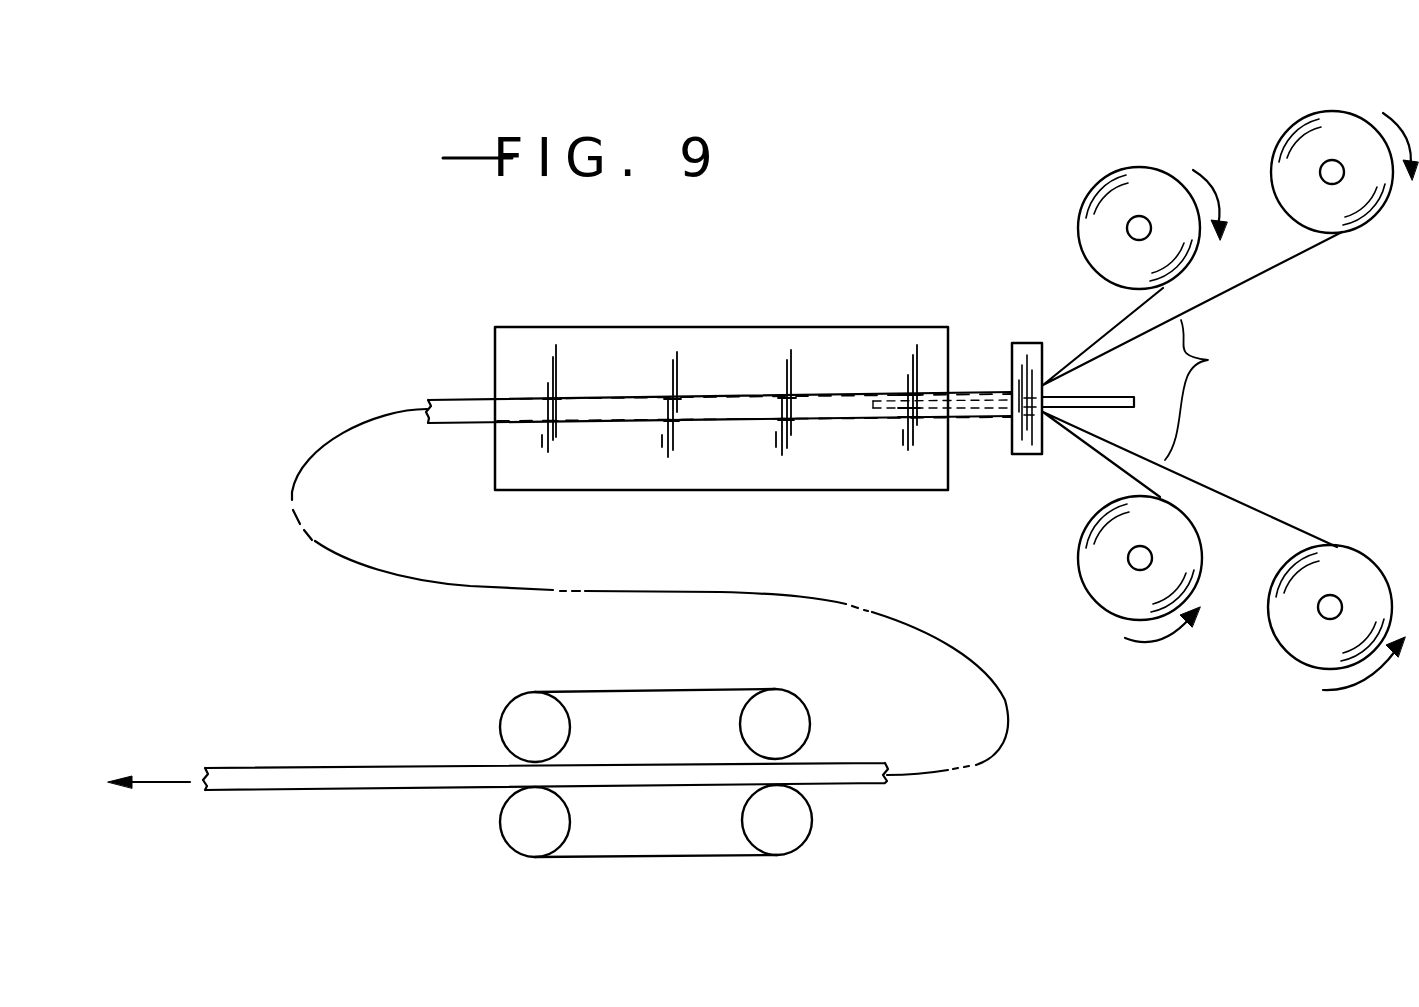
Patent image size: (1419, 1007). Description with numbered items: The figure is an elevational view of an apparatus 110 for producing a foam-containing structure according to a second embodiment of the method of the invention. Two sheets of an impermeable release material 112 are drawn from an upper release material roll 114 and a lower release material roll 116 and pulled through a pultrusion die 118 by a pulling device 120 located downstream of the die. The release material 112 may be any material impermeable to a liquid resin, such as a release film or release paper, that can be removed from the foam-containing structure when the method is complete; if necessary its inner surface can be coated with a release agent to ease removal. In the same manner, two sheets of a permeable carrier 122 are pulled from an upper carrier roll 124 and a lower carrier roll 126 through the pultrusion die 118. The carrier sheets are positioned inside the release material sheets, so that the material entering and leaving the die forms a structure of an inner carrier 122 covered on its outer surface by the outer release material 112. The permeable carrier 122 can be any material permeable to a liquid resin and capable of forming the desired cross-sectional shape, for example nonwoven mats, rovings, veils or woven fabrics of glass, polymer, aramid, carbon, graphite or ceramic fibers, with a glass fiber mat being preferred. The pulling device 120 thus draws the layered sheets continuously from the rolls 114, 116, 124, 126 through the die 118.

The apparatus 110 is at (330, 352).
The impermeable release material 112 is at (1105, 330).
The upper release material roll 114 is at (1145, 166).
The lower release material roll 116 is at (1102, 590).
The pultrusion die 118 is at (738, 336).
The pulling device 120 is at (640, 858).
The permeable carrier 122 is at (1192, 389).
The upper carrier roll 124 is at (1318, 136).
The lower carrier roll 126 is at (1392, 576).